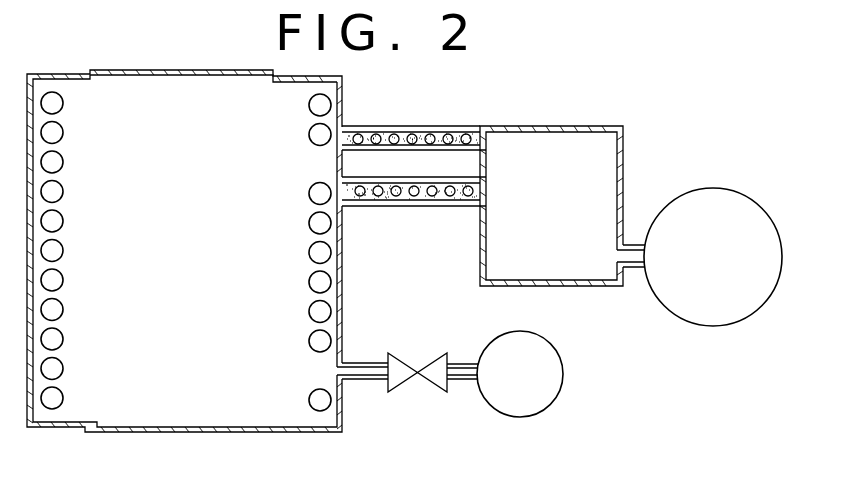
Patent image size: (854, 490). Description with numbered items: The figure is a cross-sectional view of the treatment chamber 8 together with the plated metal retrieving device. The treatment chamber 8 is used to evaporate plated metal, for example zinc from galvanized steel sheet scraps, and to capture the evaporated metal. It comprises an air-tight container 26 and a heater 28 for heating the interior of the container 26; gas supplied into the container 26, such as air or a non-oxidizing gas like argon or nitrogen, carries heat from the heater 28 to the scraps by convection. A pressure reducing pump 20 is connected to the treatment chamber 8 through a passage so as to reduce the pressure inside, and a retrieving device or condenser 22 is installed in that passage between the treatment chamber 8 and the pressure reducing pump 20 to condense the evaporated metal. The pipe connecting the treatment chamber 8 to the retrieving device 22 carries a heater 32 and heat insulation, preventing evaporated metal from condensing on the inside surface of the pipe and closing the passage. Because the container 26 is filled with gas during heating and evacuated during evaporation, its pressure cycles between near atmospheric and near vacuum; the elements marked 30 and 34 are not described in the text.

The treatment chamber 8 is at (290, 292).
The pressure reducing pump 20 is at (711, 327).
The retrieving device or condenser 22 is at (514, 126).
The air-tight container 26 is at (343, 410).
The heater 28 is at (330, 253).
The vacuum pump 30 is at (555, 398).
The heater 32 is at (447, 196).
The upper heater 34 is at (380, 113).